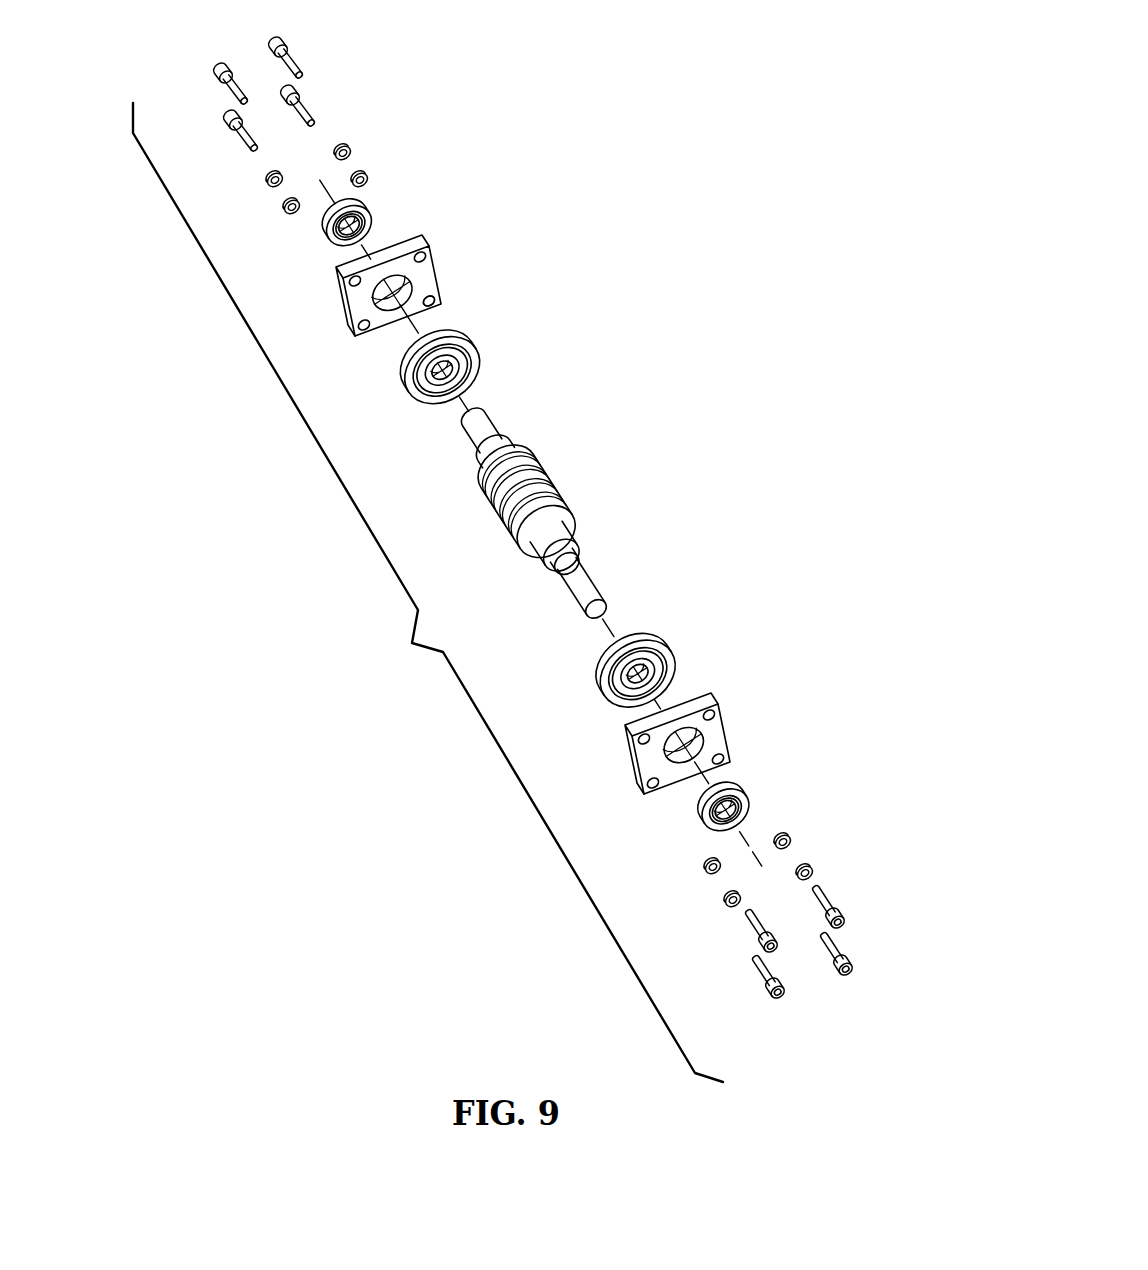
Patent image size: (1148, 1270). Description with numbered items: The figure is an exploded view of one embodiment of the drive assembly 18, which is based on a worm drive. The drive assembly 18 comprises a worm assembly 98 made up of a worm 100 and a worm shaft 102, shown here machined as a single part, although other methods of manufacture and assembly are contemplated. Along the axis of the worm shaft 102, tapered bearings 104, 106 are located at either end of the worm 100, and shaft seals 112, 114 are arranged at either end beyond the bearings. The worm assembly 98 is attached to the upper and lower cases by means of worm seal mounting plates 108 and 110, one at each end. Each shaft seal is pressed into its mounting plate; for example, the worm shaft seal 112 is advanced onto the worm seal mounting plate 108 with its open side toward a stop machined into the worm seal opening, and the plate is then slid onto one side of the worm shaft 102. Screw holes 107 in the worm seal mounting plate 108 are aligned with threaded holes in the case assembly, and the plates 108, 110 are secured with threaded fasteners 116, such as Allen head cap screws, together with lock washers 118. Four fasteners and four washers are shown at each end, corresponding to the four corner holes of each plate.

The drive assembly 18 is at (630, 230).
The worm assembly 98 is at (678, 448).
The worm 100 is at (543, 482).
The worm shaft 102 is at (587, 583).
The tapered bearing 104 is at (448, 333).
The tapered bearing 106 is at (640, 640).
The screw holes 107 is at (427, 300).
The worm seal mounting plate 108 is at (418, 233).
The worm seal mounting plate 110 is at (700, 690).
The worm shaft seal 112 is at (370, 213).
The shaft seal 114 is at (743, 795).
The threaded fasteners 116 is at (303, 110).
The lock washers 118 is at (352, 148).